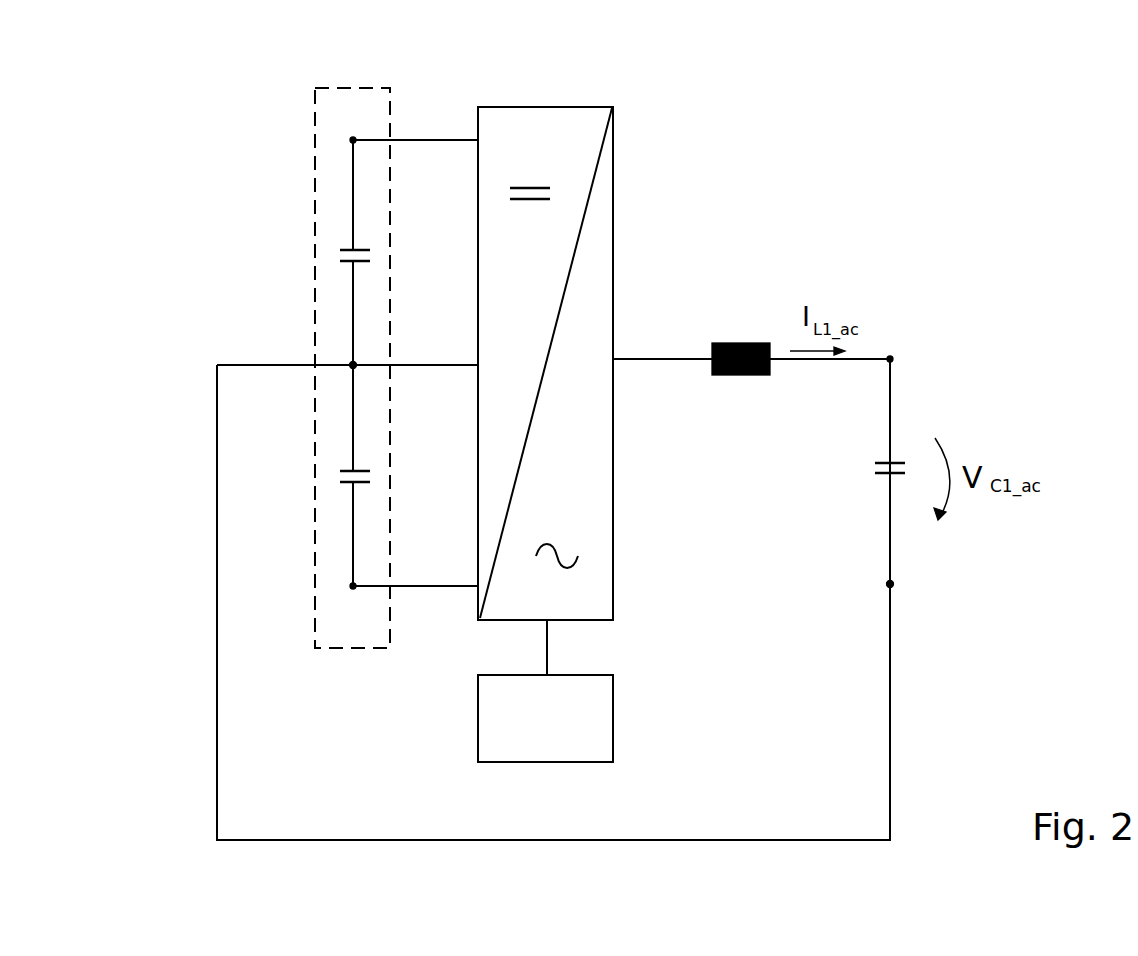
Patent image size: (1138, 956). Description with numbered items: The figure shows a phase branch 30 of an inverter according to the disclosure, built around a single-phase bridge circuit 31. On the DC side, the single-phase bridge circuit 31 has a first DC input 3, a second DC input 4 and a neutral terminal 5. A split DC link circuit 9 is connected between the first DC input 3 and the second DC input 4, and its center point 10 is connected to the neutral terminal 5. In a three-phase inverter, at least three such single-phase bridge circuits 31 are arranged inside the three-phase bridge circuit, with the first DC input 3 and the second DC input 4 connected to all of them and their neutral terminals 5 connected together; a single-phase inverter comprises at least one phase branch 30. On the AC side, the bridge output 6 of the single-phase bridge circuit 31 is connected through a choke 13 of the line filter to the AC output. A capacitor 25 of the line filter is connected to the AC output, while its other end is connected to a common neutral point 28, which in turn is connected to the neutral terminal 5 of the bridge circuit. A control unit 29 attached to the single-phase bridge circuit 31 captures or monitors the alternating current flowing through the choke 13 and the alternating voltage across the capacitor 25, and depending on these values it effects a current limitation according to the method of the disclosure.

The first DC input 3 is at (444, 139).
The second DC input 4 is at (437, 589).
The neutral terminal 5 is at (437, 363).
The bridge output 6 is at (659, 357).
The split DC link circuit 9 is at (347, 82).
The center point 10 is at (351, 364).
The choke 13 is at (742, 375).
The capacitor 25 is at (883, 478).
The neutral point 28 is at (893, 588).
The control unit 29 is at (614, 718).
The phase branch 30 is at (795, 117).
The single-phase bridge circuit 31 is at (614, 548).